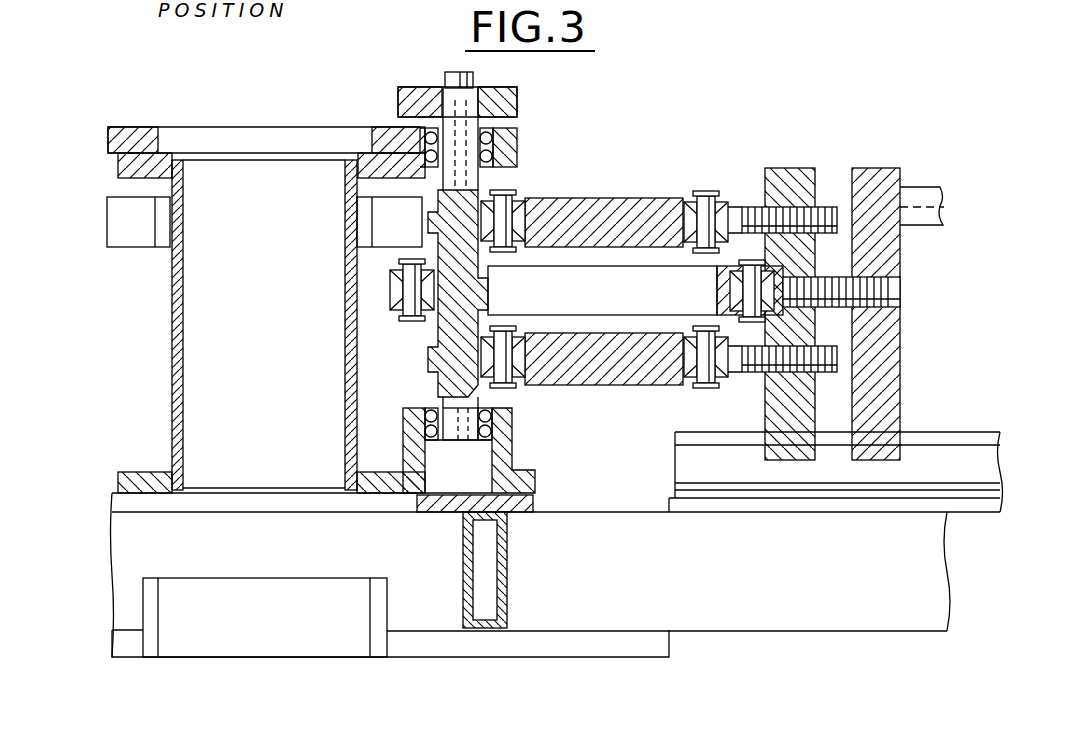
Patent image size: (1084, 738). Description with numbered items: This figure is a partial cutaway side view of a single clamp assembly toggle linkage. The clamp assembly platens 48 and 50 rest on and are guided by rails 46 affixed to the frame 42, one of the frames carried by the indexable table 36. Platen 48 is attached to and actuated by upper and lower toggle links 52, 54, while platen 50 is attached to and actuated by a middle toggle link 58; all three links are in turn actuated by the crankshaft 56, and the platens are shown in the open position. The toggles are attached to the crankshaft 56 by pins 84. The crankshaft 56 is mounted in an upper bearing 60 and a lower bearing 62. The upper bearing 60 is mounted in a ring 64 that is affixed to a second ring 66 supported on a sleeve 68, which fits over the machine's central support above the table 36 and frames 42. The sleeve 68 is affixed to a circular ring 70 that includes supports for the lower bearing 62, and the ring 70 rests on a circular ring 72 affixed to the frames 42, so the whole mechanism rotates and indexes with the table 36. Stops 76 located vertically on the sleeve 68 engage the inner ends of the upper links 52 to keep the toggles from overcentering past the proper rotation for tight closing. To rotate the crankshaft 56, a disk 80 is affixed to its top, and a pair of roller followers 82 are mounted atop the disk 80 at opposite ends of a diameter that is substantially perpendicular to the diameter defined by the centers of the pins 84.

The indexable table 36 is at (669, 649).
The frame 42 is at (508, 573).
The rails 46 is at (686, 462).
The platen 48 is at (790, 170).
The platen 50 is at (878, 170).
The upper toggle link 52 is at (637, 199).
The lower toggle link 54 is at (628, 380).
The crankshaft 56 is at (437, 378).
The middle toggle link 58 is at (635, 290).
The upper bearing 60 is at (490, 172).
The lower bearing 62 is at (490, 402).
The ring 64 is at (518, 138).
The second ring 66 is at (367, 167).
The sleeve 68 is at (345, 248).
The circular ring 70 is at (376, 472).
The circular ring 72 is at (533, 506).
The stops 76 is at (141, 245).
The disk 80 is at (482, 100).
The roller followers 82 is at (458, 72).
The pins 84 is at (512, 208).